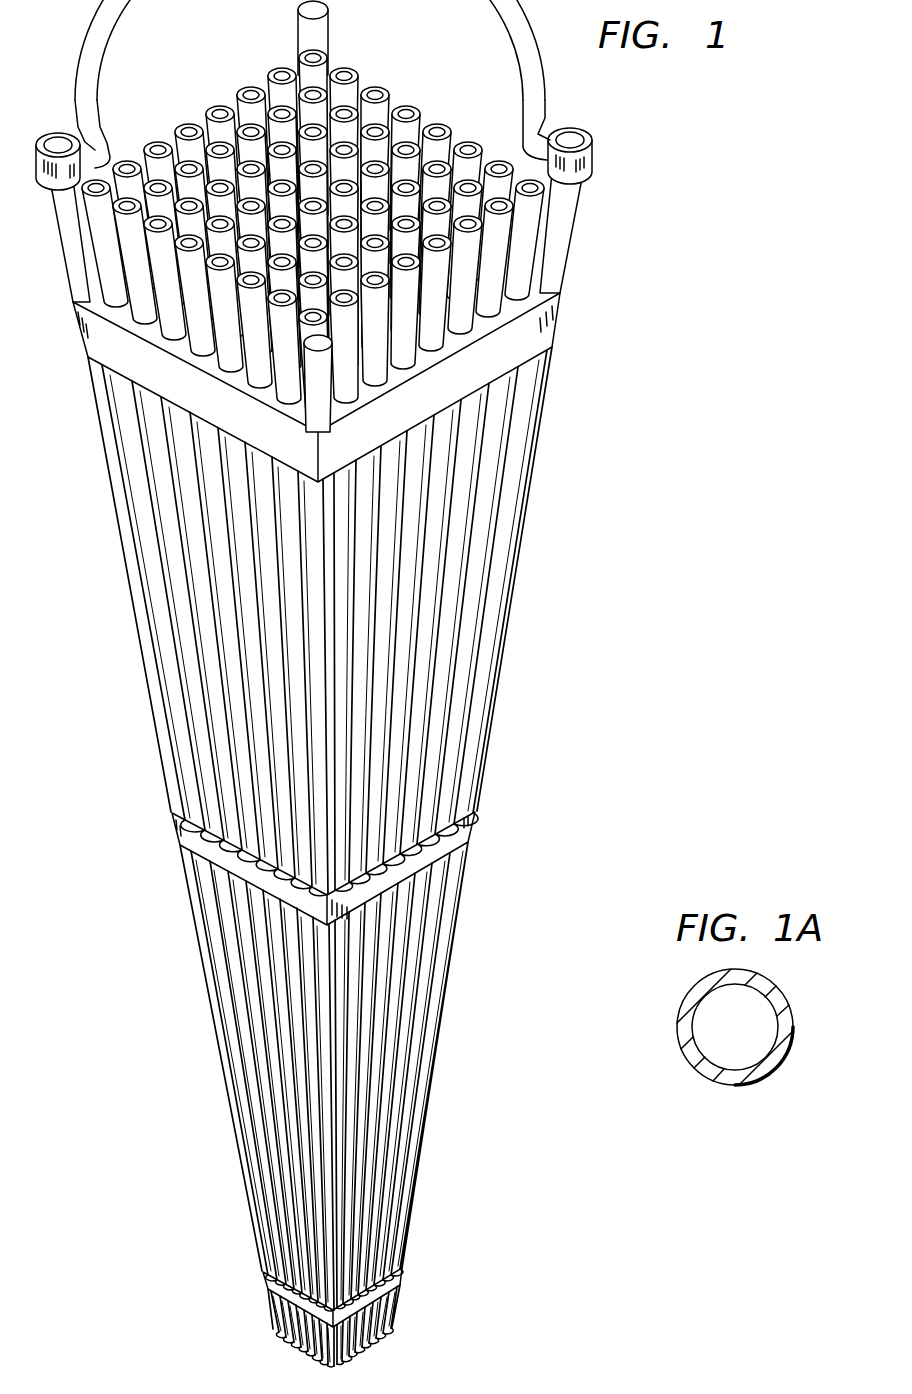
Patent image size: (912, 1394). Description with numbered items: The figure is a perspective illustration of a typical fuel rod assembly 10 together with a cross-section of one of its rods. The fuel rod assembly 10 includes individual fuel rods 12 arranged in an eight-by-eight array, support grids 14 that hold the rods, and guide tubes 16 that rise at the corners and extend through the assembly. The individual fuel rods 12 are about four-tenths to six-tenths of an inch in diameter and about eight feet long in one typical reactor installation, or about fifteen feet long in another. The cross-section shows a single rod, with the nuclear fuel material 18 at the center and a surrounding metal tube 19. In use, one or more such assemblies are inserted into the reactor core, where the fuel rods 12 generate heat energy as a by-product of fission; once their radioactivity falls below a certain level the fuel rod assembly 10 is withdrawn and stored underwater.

In FIG. 1, the fuel rod assembly 10 is at (331, 683).
In FIG. 1, the fuel rods 12 is at (220, 106).
In FIG. 1, the support grids 14 is at (552, 337).
In FIG. 1, the guide tubes 16 is at (318, 27).
In FIG. 1A, the nuclear fuel material 18 is at (762, 1022).
In FIG. 1A, the metal tube 19 is at (778, 1050).